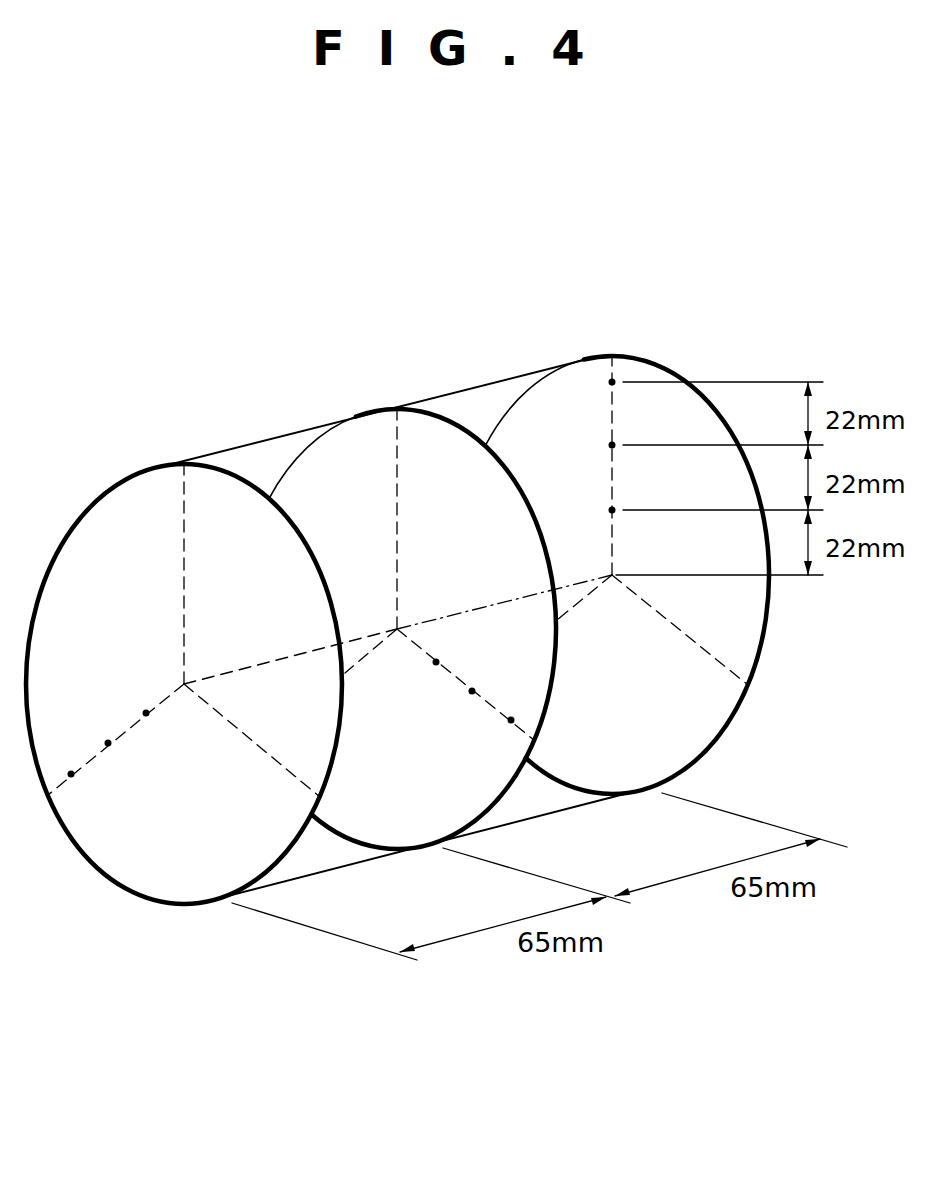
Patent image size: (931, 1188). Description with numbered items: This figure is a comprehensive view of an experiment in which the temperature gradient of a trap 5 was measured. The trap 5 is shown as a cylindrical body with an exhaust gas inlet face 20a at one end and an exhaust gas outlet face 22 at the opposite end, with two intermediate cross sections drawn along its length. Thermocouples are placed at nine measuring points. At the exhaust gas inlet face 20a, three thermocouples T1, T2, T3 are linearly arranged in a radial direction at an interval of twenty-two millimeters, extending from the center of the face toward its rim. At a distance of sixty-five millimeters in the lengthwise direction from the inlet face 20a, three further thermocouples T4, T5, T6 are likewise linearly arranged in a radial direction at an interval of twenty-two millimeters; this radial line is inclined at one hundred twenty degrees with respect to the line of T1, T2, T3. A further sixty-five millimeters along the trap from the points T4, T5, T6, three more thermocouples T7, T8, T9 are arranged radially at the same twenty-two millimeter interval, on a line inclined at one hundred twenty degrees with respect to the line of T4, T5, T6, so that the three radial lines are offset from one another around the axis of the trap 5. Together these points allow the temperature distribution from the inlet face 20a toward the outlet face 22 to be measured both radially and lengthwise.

The trap 5 is at (257, 442).
The exhaust gas inlet face 20a is at (537, 432).
The exhaust gas outlet face 22 is at (148, 873).
The thermocouple measuring point T1 is at (587, 521).
The thermocouple measuring point T2 is at (587, 457).
The thermocouple measuring point T3 is at (587, 394).
The thermocouple measuring point T4 is at (410, 668).
The thermocouple measuring point T5 is at (451, 707).
The thermocouple measuring point T6 is at (492, 737).
The thermocouple measuring point T7 is at (171, 724).
The thermocouple measuring point T8 is at (132, 757).
The thermocouple measuring point T9 is at (92, 791).